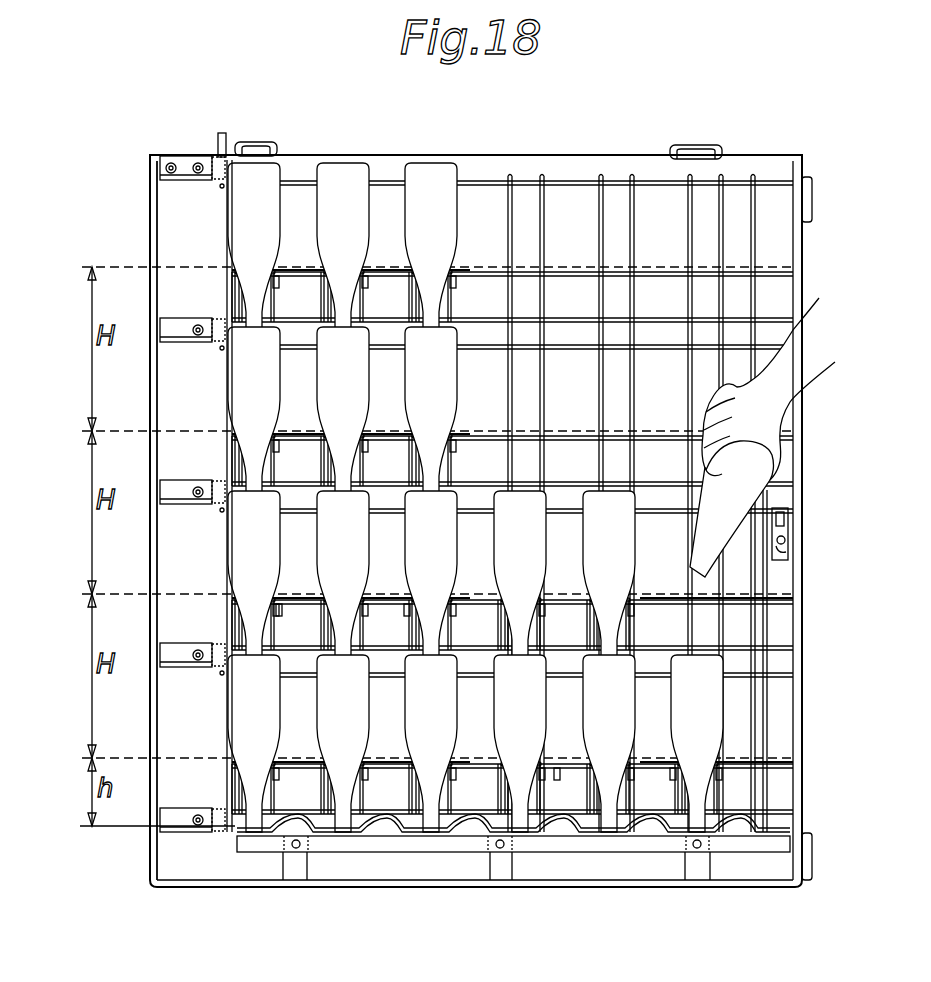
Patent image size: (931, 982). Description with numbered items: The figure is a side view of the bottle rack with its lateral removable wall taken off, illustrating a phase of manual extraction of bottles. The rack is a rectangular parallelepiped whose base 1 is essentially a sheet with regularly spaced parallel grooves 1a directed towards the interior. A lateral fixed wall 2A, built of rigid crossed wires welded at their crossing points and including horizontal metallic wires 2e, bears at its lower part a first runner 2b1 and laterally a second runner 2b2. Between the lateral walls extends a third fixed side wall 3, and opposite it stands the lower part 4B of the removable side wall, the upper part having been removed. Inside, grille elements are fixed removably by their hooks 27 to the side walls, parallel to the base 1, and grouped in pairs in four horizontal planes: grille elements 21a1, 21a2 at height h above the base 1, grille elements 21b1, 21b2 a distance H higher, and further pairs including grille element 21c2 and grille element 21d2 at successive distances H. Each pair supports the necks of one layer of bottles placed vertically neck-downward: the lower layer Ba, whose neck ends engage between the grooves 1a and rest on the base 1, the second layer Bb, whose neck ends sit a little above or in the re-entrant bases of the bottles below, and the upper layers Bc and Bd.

The base 1 is at (569, 846).
The grooves 1a is at (396, 828).
The lateral fixed wall 2A is at (497, 241).
The first runner 2b1 is at (432, 888).
The second runner 2b2 is at (156, 251).
The horizontal metallic wires 2e is at (650, 274).
The third fixed side wall 3 is at (226, 294).
The lower part of removable side wall 4B is at (771, 698).
The grille element 21a1 is at (738, 745).
The grille element 21a2 is at (302, 760).
The grille element 21b1 is at (736, 578).
The grille element 21b2 is at (302, 596).
The grille element 21c2 is at (302, 432).
The grille element 21d2 is at (301, 268).
The hooks 27 is at (284, 606).
The lower layer of bottles Ba is at (258, 716).
The second layer of bottles Bb is at (258, 554).
The third layer of bottles Bc is at (258, 388).
The fourth layer of bottles Bd is at (258, 236).